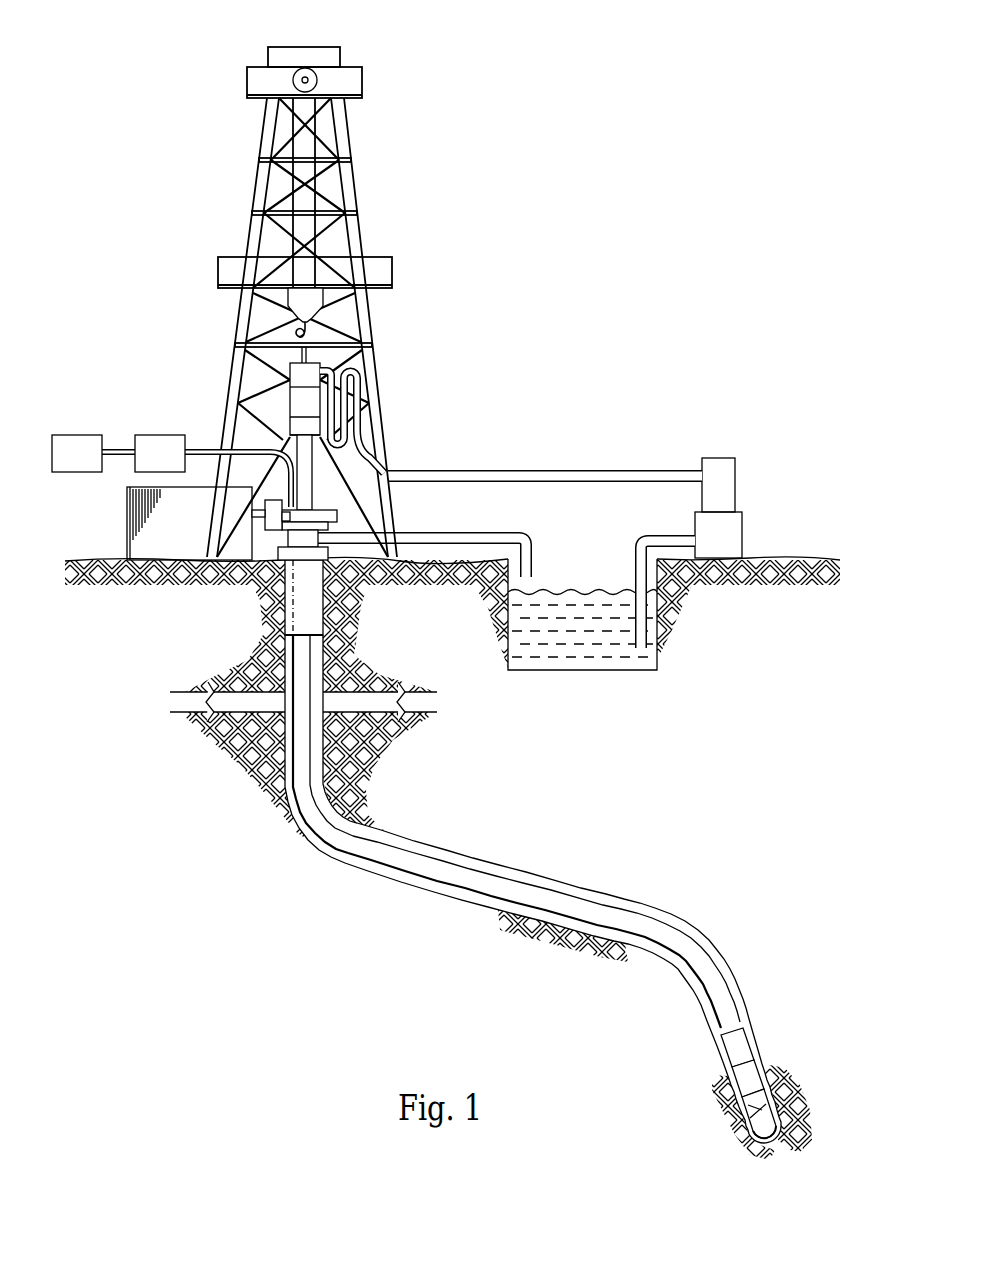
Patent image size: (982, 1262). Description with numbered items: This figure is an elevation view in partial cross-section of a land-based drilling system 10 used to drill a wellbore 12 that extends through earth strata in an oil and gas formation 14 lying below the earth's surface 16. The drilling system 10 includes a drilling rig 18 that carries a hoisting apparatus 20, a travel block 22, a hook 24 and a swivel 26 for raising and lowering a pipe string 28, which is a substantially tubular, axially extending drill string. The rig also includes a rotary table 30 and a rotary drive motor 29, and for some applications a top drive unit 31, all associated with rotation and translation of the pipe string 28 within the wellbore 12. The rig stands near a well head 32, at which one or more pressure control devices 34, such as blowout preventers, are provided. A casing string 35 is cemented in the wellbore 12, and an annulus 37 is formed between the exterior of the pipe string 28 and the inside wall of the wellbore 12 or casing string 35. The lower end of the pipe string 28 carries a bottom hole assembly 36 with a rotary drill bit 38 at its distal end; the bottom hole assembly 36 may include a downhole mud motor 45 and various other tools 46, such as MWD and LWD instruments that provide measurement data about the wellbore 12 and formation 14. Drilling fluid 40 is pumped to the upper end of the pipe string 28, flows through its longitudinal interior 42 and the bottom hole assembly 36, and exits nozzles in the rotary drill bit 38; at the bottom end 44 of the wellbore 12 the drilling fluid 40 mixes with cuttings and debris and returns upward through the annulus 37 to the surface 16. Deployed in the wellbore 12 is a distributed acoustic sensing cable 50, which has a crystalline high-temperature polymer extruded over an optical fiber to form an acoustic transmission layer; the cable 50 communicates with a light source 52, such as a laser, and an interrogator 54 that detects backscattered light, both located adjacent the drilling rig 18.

The drilling system 10 is at (148, 84).
The wellbore 12 is at (305, 837).
The oil and gas formation 14 is at (521, 731).
The earth's surface 16 is at (784, 558).
The drilling rig 18 is at (254, 190).
The hoisting apparatus 20 is at (299, 68).
The travel block 22 is at (297, 309).
The hook 24 is at (313, 334).
The swivel 26 is at (298, 377).
The pipe string 28 is at (401, 841).
The rotary drive motor 29 is at (125, 523).
The rotary table 30 is at (318, 507).
The top drive unit 31 is at (297, 424).
The well head 32 is at (273, 544).
The pressure control device 34 is at (357, 573).
The casing string 35 is at (327, 616).
The bottom hole assembly 36 is at (732, 1089).
The annulus 37 is at (509, 872).
The rotary drill bit 38 is at (775, 1098).
The drilling fluid 40 is at (573, 600).
The longitudinal interior 42 is at (565, 892).
The bottom end 44 is at (752, 1135).
The downhole mud motor 45 is at (760, 1073).
The tools 46 is at (752, 1042).
The distributed acoustic sensing cable 50 is at (352, 858).
The light source 52 is at (75, 433).
The interrogator 54 is at (158, 433).